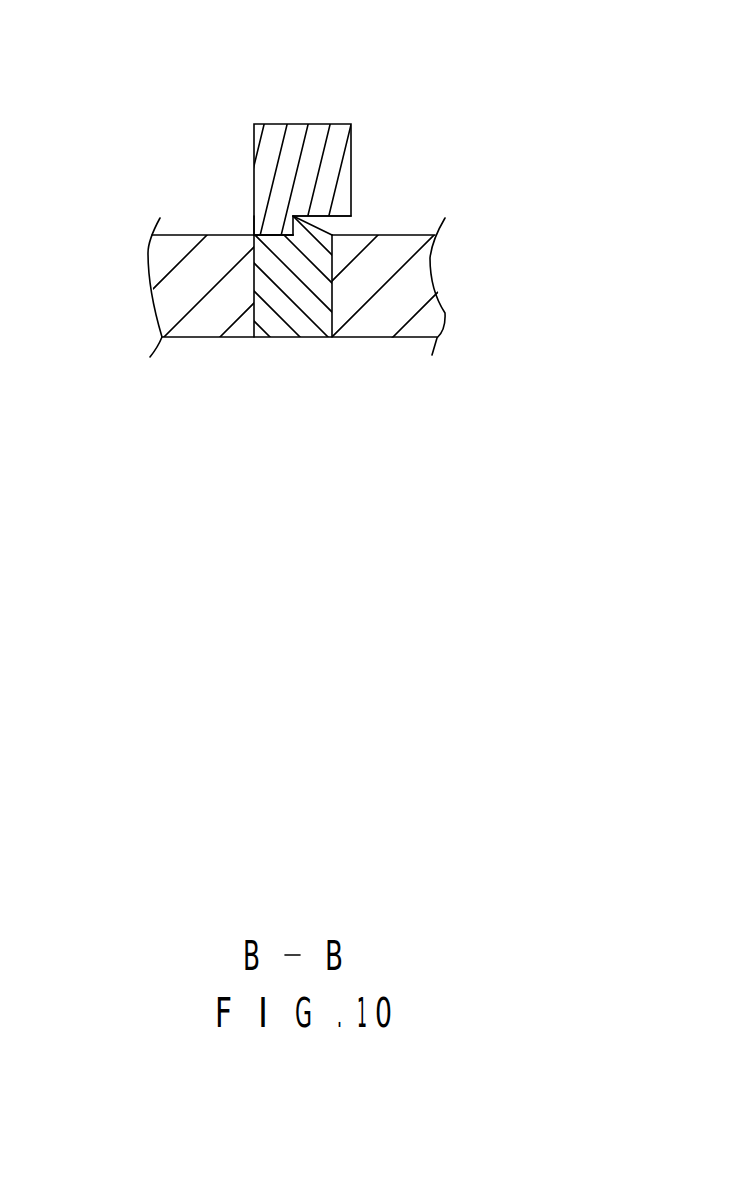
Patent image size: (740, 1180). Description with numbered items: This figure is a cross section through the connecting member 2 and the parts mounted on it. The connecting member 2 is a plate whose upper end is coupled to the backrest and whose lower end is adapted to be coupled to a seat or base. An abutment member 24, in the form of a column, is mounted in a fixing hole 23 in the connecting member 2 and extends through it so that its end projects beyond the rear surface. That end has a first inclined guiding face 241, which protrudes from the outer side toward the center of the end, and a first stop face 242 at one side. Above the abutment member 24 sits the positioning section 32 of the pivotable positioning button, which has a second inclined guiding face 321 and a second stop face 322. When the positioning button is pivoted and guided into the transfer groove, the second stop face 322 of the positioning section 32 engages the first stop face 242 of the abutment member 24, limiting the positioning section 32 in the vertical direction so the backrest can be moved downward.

The connecting member 2 is at (402, 302).
The fixing hole 23 is at (332, 284).
The abutment member 24 is at (305, 318).
The first inclined guiding face 241 is at (301, 222).
The first stop face 242 is at (282, 234).
The positioning section 32 is at (294, 165).
The second inclined guiding face 321 is at (286, 230).
The second stop face 322 is at (296, 217).